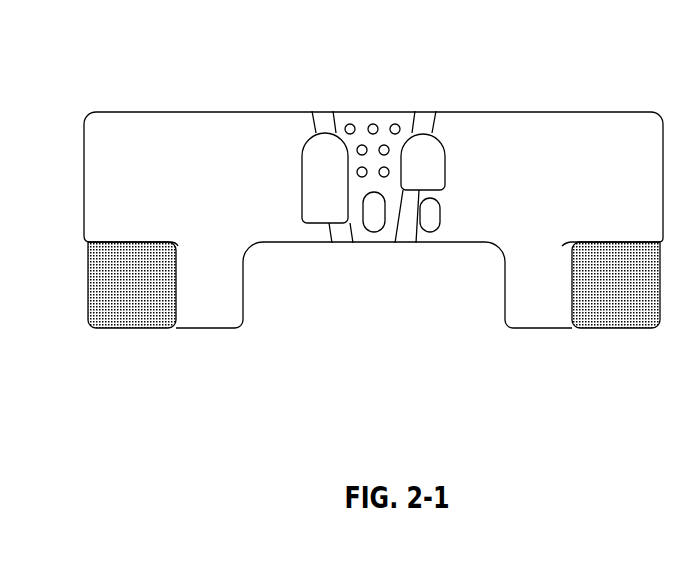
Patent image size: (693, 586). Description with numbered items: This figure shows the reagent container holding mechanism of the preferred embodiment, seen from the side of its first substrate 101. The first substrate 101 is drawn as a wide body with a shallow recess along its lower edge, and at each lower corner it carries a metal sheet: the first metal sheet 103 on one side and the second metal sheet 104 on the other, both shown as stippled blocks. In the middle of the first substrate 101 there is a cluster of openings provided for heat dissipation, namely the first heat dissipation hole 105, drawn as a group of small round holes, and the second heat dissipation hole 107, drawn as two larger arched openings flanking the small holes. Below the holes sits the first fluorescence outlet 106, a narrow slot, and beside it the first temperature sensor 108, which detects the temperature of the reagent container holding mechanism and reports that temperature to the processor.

The first substrate 101 is at (202, 107).
The first metal sheet 103 is at (145, 320).
The second metal sheet 104 is at (612, 320).
The first heat dissipation hole 105 is at (398, 124).
The first fluorescence outlet 106 is at (373, 232).
The second heat dissipation hole 107 is at (318, 205).
The first temperature sensor 108 is at (430, 232).